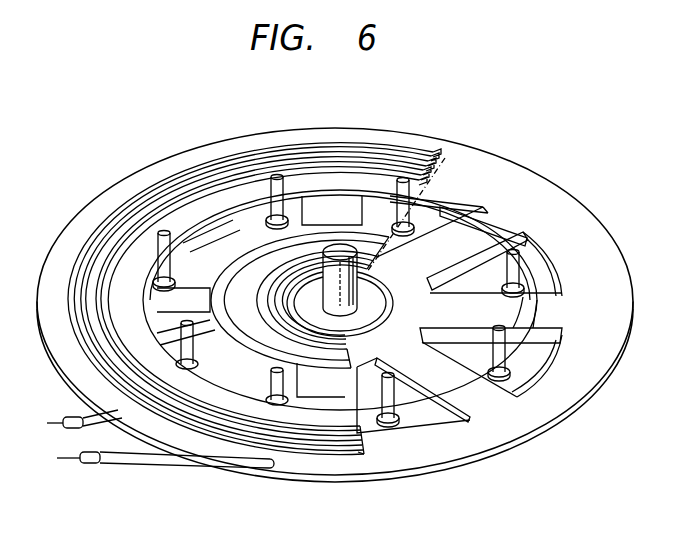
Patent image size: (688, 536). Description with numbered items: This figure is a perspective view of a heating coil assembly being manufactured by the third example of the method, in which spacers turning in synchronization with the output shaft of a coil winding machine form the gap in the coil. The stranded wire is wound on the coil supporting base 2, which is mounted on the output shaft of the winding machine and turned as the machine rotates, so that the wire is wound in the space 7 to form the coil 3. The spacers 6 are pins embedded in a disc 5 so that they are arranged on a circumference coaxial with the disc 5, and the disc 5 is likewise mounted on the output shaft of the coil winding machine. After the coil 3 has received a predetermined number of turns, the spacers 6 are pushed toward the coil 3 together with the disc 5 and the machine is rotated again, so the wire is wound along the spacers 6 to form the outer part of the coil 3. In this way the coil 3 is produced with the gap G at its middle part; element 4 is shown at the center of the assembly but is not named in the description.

The coil supporting base 2 is at (405, 141).
The coil 3 is at (172, 168).
The center boss 4 is at (337, 250).
The disc 5 is at (540, 288).
The spacers 6 is at (522, 265).
The space 7 is at (472, 222).
The gap G is at (325, 382).